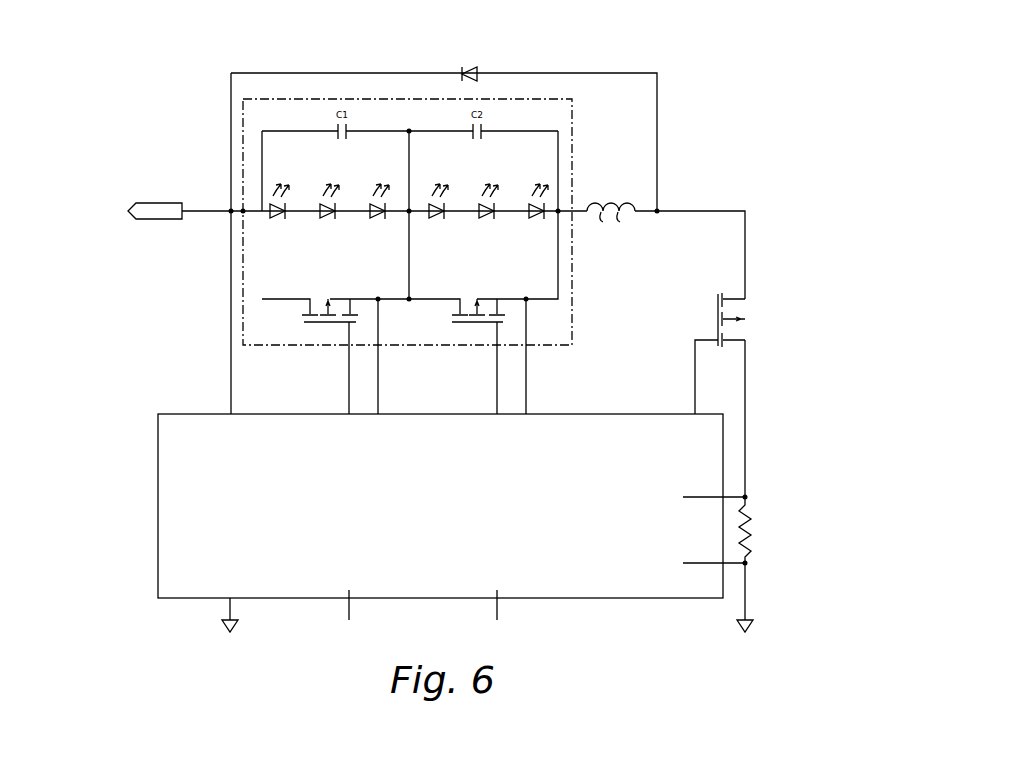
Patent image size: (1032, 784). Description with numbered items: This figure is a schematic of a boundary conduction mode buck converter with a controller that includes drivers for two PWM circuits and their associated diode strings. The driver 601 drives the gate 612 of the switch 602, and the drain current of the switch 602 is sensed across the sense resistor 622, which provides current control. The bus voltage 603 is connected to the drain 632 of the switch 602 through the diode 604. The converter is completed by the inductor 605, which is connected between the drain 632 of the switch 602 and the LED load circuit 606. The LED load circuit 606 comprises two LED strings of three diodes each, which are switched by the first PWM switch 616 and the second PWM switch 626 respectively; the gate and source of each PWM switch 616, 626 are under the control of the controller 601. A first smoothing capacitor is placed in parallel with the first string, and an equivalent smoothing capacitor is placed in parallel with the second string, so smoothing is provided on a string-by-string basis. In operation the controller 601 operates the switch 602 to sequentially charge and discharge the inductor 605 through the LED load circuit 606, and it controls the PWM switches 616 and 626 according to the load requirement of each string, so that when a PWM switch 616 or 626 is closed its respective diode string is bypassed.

The driver 601 is at (158, 418).
The switch 602 is at (772, 320).
The Vbus 603 is at (165, 197).
The diode D1 604 is at (478, 65).
The inductor L1 605 is at (617, 195).
The LED load circuit 606 is at (243, 345).
The gate 612 is at (700, 345).
The PWM switch 616 is at (312, 296).
The Rsense 622 is at (762, 548).
The PWM switch 626 is at (503, 291).
The drain 632 is at (733, 300).